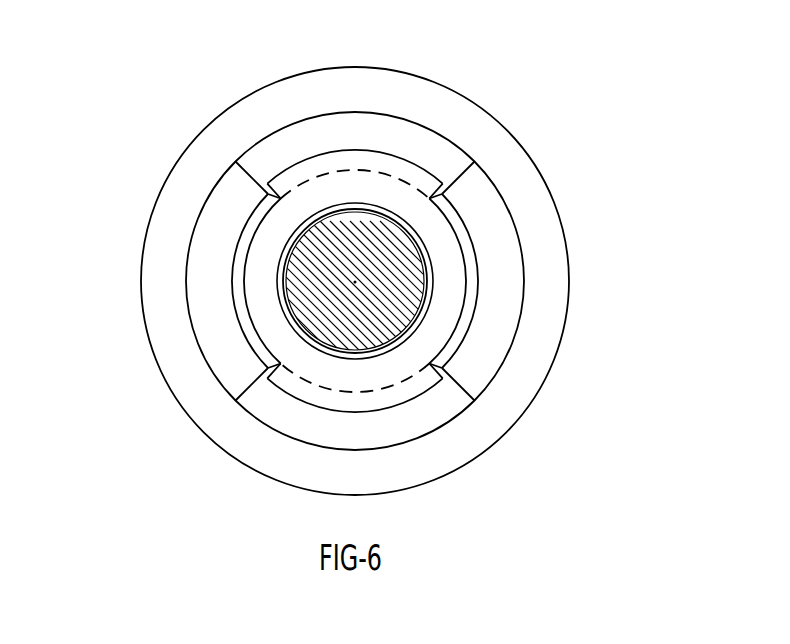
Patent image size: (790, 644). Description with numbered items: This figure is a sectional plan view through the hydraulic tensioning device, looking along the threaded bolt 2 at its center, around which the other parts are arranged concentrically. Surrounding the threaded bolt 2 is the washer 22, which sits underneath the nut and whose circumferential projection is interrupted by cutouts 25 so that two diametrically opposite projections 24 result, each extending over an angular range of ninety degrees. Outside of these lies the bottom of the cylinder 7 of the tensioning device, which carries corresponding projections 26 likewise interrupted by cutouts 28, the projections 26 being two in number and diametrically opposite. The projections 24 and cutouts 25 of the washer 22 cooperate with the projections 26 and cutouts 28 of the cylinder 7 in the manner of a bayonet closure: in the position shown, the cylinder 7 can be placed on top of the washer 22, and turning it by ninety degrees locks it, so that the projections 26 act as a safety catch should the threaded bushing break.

The threaded bolt 2 is at (313, 283).
The cylinder 7 is at (482, 133).
The washer 22 is at (263, 240).
The projections 24 is at (305, 173).
The cutouts 25 is at (455, 227).
The projections 26 is at (502, 270).
The cutouts 28 is at (397, 138).